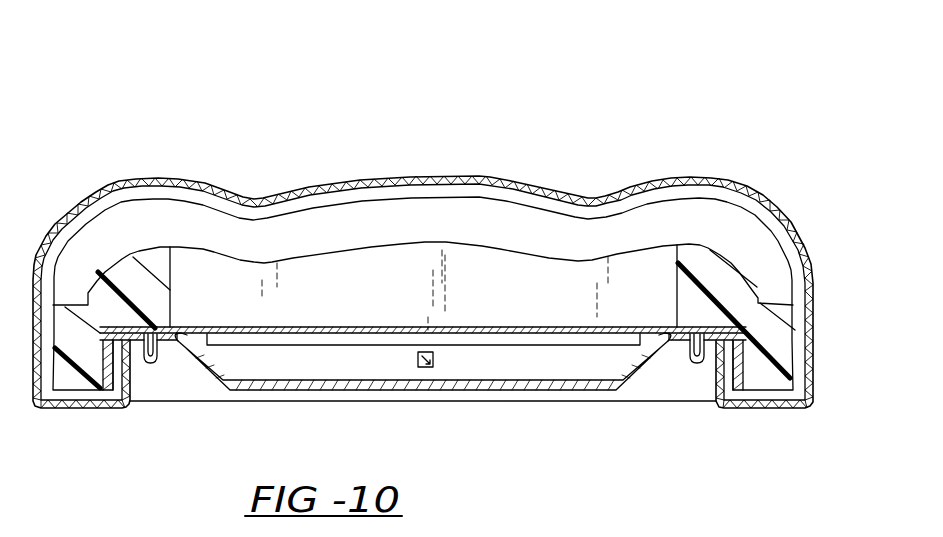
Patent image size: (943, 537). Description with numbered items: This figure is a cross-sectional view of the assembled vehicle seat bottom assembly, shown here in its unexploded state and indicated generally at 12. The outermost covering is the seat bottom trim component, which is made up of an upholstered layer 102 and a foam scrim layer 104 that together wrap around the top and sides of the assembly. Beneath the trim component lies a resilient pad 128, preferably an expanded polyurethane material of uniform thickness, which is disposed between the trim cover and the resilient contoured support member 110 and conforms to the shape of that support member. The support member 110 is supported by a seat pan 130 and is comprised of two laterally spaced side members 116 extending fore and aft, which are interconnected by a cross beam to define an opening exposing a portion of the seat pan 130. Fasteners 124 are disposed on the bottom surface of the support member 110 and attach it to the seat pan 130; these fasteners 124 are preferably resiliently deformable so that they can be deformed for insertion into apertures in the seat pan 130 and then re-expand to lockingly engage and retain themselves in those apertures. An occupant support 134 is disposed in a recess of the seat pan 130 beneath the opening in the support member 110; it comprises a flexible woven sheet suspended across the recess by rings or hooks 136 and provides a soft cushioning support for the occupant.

The seat cushion assembly 12 is at (442, 264).
The upholstered layer 102 is at (717, 183).
The foam scrim layer 104 is at (752, 212).
The resilient contoured support member 110 is at (126, 274).
The side members 116 is at (77, 356).
The fasteners 124 is at (151, 366).
The resilient pad 128 is at (305, 225).
The seat pan 130 is at (524, 391).
The occupant support 134 is at (279, 342).
The rings or hooks 136 is at (182, 344).